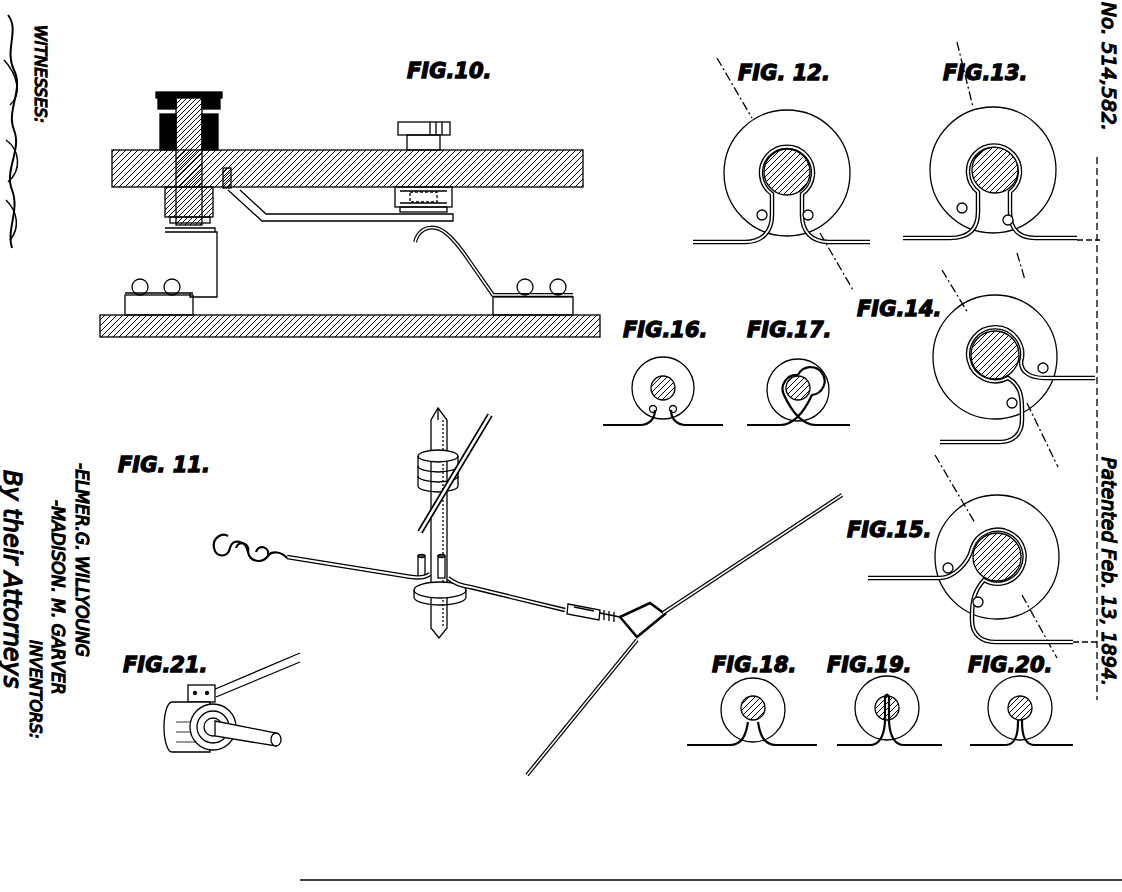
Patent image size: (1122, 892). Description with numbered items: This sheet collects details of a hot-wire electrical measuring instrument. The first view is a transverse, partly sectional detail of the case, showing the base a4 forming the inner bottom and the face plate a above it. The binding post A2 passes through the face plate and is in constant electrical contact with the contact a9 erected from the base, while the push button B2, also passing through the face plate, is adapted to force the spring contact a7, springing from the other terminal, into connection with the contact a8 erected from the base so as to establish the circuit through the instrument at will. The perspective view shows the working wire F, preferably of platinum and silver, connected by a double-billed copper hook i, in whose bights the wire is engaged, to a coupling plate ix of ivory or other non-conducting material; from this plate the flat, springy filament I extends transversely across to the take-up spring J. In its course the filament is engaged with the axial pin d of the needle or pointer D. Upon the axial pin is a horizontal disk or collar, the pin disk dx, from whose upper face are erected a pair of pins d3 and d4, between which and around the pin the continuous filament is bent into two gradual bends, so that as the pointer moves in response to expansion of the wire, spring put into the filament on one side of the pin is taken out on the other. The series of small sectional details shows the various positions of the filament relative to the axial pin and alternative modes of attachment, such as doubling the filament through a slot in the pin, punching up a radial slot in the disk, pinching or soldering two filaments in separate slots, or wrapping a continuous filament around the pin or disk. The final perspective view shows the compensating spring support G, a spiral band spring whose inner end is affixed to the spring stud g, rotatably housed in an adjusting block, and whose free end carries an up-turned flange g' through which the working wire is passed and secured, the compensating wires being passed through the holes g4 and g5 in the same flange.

In FIG. 10, the binding post A2 is at (160, 118).
In FIG. 10, the face plate a is at (348, 150).
In FIG. 10, the push button B2 is at (450, 128).
In FIG. 10, the spring contact a7 is at (320, 222).
In FIG. 10, the contact a9 is at (195, 237).
In FIG. 10, the contact a8 is at (440, 240).
In FIG. 10, the base a4 is at (340, 338).
In FIG. 11, the axial pin d is at (433, 437).
In FIG. 12, the axial pin d is at (787, 160).
In FIG. 13, the axial pin d is at (995, 160).
In FIG. 14, the axial pin d is at (980, 345).
In FIG. 15, the axial pin d is at (1015, 548).
In FIG. 16, the axial pin d is at (675, 385).
In FIG. 17, the axial pin d is at (788, 380).
In FIG. 18, the axial pin d is at (767, 708).
In FIG. 19, the axial pin d is at (901, 706).
In FIG. 20, the axial pin d is at (1034, 706).
In FIG. 11, the needle or pointer D is at (483, 432).
In FIG. 12, the needle or pointer D is at (738, 106).
In FIG. 13, the needle or pointer D is at (970, 103).
In FIG. 14, the needle or pointer D is at (953, 284).
In FIG. 15, the needle or pointer D is at (997, 556).
In FIG. 11, the pin d4 is at (418, 565).
In FIG. 12, the pin d4 is at (756, 218).
In FIG. 13, the pin d4 is at (958, 212).
In FIG. 14, the pin d4 is at (1007, 403).
In FIG. 15, the pin d4 is at (942, 567).
In FIG. 16, the pin d4 is at (648, 410).
In FIG. 11, the pin d3 is at (446, 566).
In FIG. 12, the pin d3 is at (814, 217).
In FIG. 13, the pin d3 is at (1014, 221).
In FIG. 14, the pin d3 is at (1043, 363).
In FIG. 15, the pin d3 is at (984, 604).
In FIG. 16, the pin d3 is at (680, 410).
In FIG. 11, the take-up spring J is at (240, 566).
In FIG. 11, the filament I is at (368, 578).
In FIG. 12, the filament I is at (756, 248).
In FIG. 13, the filament I is at (948, 244).
In FIG. 14, the filament I is at (952, 438).
In FIG. 15, the filament I is at (970, 586).
In FIG. 16, the filament I is at (612, 430).
In FIG. 17, the filament I is at (755, 430).
In FIG. 18, the filament I is at (698, 748).
In FIG. 19, the filament I is at (848, 748).
In FIG. 20, the filament I is at (993, 748).
In FIG. 11, the pin disk dx is at (418, 602).
In FIG. 12, the pin disk dx is at (736, 172).
In FIG. 13, the pin disk dx is at (950, 168).
In FIG. 14, the pin disk dx is at (945, 368).
In FIG. 15, the pin disk dx is at (1027, 513).
In FIG. 16, the pin disk dx is at (640, 389).
In FIG. 17, the pin disk dx is at (830, 390).
In FIG. 18, the pin disk dx is at (728, 707).
In FIG. 19, the pin disk dx is at (862, 707).
In FIG. 20, the pin disk dx is at (998, 707).
In FIG. 11, the coupling plate ix is at (574, 620).
In FIG. 11, the double-billed copper hook i is at (652, 600).
In FIG. 11, the working wire F is at (748, 553).
In FIG. 13, the working wire F is at (1095, 206).
In FIG. 14, the working wire F is at (1095, 330).
In FIG. 15, the working wire F is at (1095, 610).
In FIG. 21, the up-turned flange g' is at (182, 691).
In FIG. 21, the hole g5 is at (178, 705).
In FIG. 21, the compensating spring support G is at (182, 728).
In FIG. 21, the hole g4 is at (216, 693).
In FIG. 21, the spring stud g is at (261, 725).